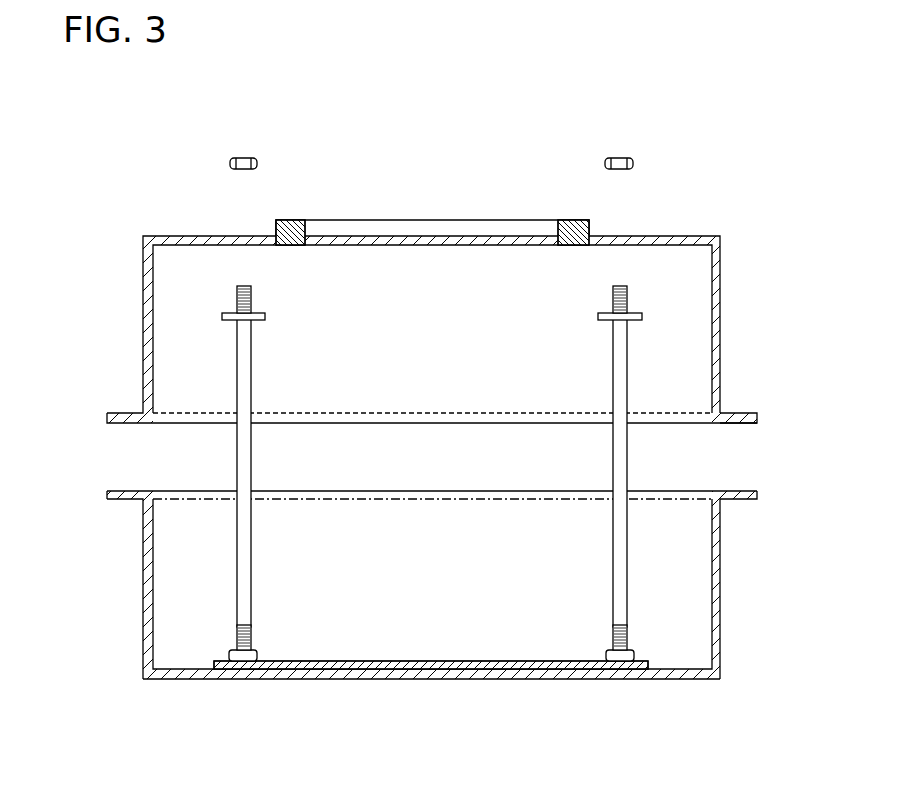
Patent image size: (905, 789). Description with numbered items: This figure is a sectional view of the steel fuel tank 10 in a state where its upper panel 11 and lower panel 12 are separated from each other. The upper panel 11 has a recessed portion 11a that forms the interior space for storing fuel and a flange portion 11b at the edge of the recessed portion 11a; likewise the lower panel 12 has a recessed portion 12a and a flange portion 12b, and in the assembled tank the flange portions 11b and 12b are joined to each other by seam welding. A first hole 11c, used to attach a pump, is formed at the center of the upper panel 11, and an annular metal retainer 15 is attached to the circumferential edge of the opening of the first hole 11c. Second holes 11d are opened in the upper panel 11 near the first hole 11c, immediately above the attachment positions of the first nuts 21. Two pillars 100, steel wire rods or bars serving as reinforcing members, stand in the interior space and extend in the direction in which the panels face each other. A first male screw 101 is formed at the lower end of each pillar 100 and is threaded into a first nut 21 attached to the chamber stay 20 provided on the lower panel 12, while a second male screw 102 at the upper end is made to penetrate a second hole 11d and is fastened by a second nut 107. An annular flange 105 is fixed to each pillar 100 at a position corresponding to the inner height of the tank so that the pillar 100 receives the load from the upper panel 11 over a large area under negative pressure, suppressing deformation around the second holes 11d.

The fuel tank 10 is at (134, 159).
The upper panel 11 is at (143, 318).
The recessed portion 11a is at (678, 251).
The flange portion 11b is at (740, 410).
The first hole 11c is at (310, 238).
The second hole 11d is at (245, 240).
The lower panel 12 is at (143, 578).
The recessed portion 12a is at (676, 667).
The flange portion 12b is at (735, 498).
The retainer 15 is at (573, 224).
The chamber stay 20 is at (458, 661).
The first nut 21 is at (257, 655).
The pillar 100 is at (251, 556).
The first male screw 101 is at (237, 637).
The second male screw 102 is at (237, 301).
The annular flange 105 is at (258, 318).
The second nut 107 is at (232, 163).